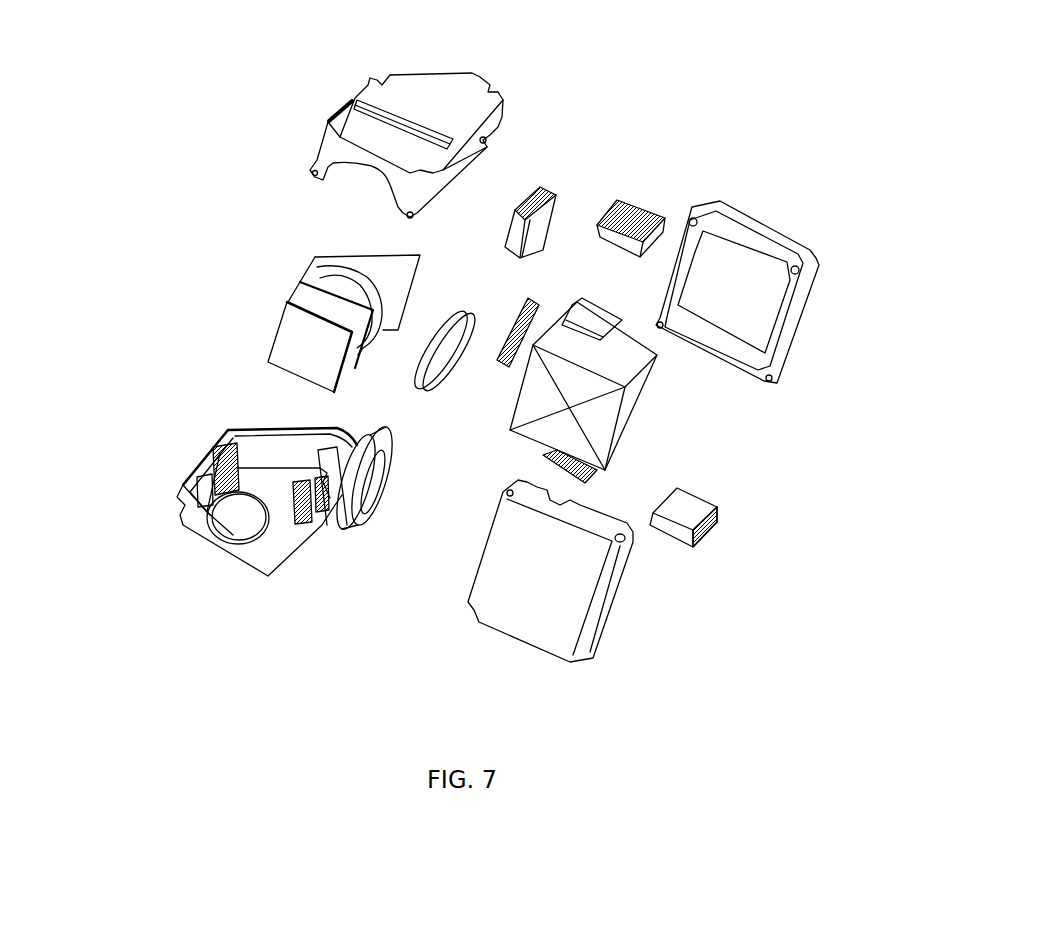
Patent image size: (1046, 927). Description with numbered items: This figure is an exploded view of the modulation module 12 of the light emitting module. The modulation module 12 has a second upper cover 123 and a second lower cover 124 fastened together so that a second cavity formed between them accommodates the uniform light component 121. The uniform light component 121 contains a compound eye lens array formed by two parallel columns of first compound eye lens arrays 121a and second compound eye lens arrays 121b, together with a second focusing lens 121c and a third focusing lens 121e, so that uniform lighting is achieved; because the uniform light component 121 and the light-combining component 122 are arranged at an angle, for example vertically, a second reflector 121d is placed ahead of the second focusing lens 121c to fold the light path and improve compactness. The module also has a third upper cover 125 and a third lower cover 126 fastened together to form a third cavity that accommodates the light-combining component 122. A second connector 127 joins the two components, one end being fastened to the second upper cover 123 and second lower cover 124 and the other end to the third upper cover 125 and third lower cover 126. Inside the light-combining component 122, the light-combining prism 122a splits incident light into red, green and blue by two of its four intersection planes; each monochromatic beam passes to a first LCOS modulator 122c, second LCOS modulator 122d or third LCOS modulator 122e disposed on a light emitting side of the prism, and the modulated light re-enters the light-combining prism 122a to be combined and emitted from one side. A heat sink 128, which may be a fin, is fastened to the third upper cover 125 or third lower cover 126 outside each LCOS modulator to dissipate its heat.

The modulation module 12 is at (571, 20).
The uniform light component 121 is at (163, 237).
The first compound eye lens arrays 121a is at (287, 338).
The second compound eye lens arrays 121b is at (307, 283).
The second focusing lens 121c is at (315, 257).
The second reflector 121d is at (363, 263).
The third focusing lens 121e is at (427, 358).
The light-combining component 122 is at (733, 442).
The light-combining prism 122a is at (628, 413).
The first LCOS modulator 122c is at (547, 455).
The second LCOS modulator 122d is at (522, 307).
The third LCOS modulator 122e is at (608, 280).
The second upper cover 123 is at (417, 90).
The second lower cover 124 is at (257, 445).
The third upper cover 125 is at (765, 233).
The third lower cover 126 is at (513, 610).
The second connector 127 is at (352, 517).
The heat sink 128 is at (527, 197).